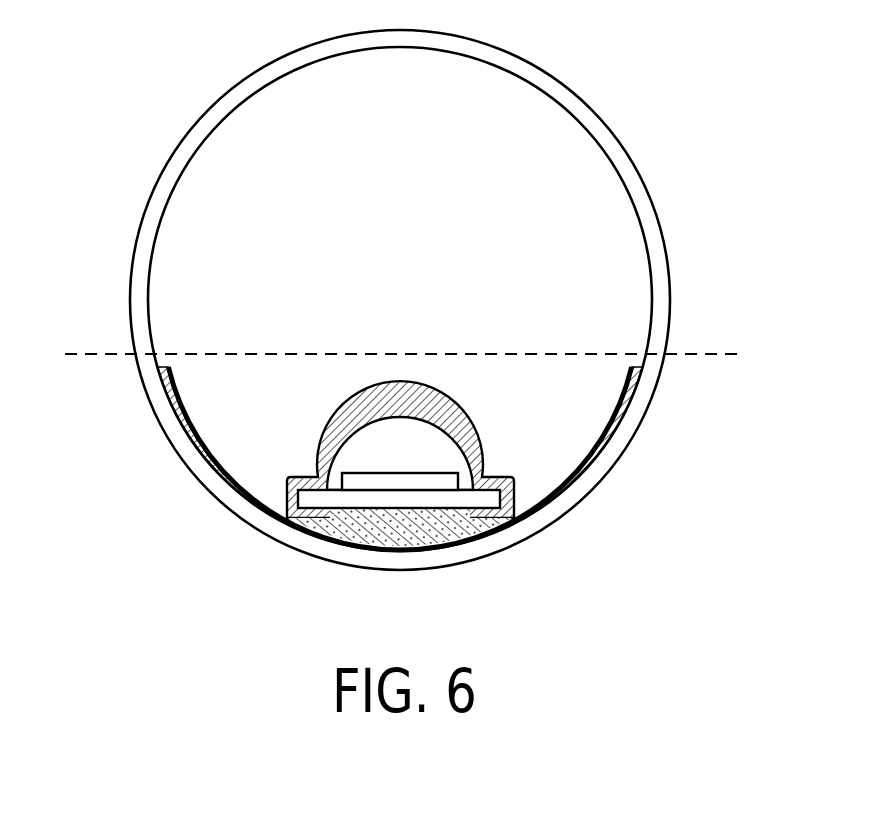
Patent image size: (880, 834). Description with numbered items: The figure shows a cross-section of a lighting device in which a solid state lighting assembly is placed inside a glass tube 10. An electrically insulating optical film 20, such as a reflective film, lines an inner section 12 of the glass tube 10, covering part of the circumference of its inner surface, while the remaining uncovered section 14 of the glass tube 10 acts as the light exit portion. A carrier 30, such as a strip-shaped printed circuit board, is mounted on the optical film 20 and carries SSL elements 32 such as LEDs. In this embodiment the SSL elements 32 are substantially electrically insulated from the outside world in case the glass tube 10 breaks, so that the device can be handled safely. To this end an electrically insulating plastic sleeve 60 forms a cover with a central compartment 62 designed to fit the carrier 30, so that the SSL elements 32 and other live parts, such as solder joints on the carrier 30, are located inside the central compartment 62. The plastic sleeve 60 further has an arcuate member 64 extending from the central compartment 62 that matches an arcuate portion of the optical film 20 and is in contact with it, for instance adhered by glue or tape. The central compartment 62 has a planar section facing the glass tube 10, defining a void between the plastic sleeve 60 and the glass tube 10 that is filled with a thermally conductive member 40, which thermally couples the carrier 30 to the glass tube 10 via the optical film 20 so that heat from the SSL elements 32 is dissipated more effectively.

The glass tube 10 is at (658, 215).
The inner section 12 is at (153, 380).
The uncovered section 14 is at (153, 221).
The optical film 20 is at (633, 404).
The carrier 30 is at (330, 499).
The SSL elements 32 is at (433, 482).
The thermally conductive member 40 is at (385, 532).
The plastic sleeve 60 is at (581, 478).
The central compartment 62 is at (400, 405).
The arcuate member 64 is at (217, 476).